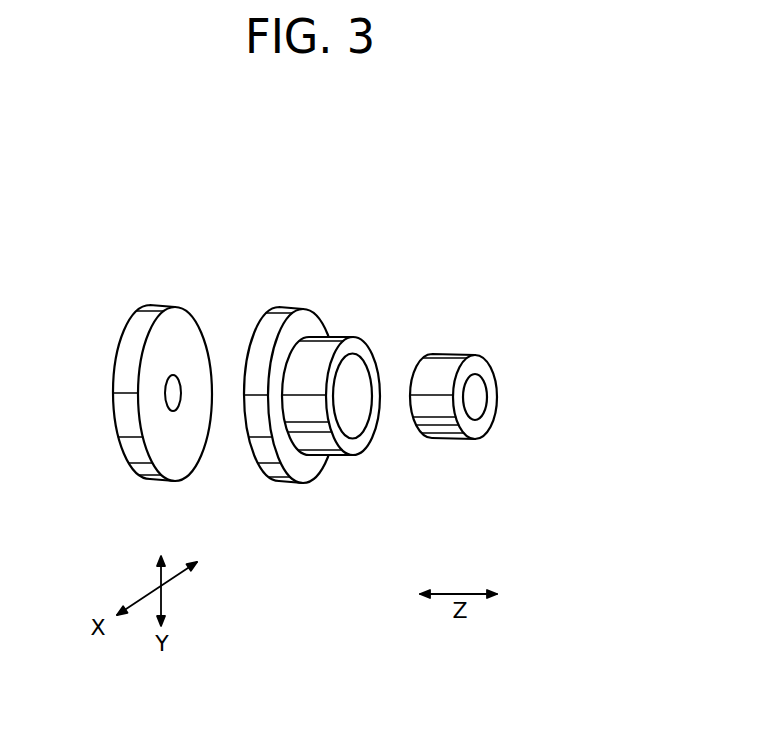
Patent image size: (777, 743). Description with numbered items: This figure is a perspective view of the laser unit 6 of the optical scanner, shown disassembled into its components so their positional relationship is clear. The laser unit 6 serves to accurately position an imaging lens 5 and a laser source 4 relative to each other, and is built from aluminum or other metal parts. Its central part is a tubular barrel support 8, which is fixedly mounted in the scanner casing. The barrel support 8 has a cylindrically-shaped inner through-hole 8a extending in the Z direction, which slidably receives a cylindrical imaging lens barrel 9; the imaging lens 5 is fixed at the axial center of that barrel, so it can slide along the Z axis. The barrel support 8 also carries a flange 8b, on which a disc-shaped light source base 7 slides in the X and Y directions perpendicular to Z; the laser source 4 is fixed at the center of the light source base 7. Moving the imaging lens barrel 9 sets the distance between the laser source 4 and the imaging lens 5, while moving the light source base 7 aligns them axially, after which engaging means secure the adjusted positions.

The laser unit 6 is at (110, 194).
The barrel support 8 is at (272, 241).
The light source base 7 is at (119, 345).
The laser source 4 is at (179, 373).
The flange 8b is at (293, 312).
The inner through-hole 8a is at (353, 377).
The imaging lens barrel 9 is at (443, 354).
The imaging lens 5 is at (477, 377).